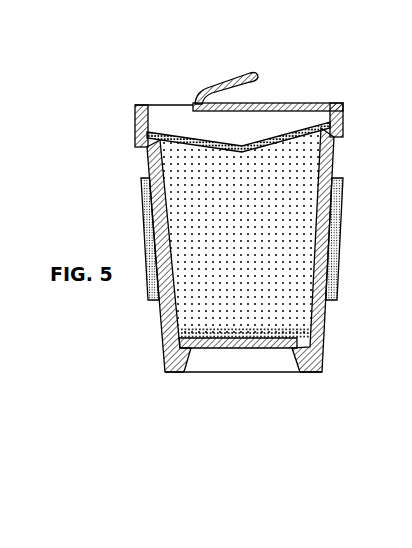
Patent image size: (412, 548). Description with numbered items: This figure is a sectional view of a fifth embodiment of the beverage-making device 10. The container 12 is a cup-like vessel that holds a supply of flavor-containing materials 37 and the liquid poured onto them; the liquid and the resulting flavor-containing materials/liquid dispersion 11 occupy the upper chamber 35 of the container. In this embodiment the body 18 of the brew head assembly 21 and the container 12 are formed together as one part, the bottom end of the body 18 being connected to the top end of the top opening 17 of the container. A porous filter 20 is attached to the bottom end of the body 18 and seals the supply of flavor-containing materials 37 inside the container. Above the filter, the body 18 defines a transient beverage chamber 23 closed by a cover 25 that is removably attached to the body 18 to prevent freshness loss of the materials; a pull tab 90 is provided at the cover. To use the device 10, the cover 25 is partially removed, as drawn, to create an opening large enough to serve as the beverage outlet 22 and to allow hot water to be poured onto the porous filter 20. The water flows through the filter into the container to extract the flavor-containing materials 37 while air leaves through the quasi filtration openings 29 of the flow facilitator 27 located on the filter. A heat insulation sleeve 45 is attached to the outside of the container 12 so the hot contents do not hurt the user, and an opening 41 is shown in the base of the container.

The device 10 is at (352, 86).
The flavor-containing materials/liquid dispersion 11 is at (172, 195).
The container 12 is at (332, 354).
The top opening 17 is at (172, 157).
The body 18 is at (343, 129).
The porous filter 20 is at (280, 139).
The brew head assembly 21 is at (354, 156).
The beverage outlet 22 is at (153, 112).
The transient beverage chamber 23 is at (183, 113).
The cover 25 is at (260, 103).
The flow facilitator 27 is at (292, 152).
The quasi filtration openings 29 is at (320, 131).
The upper chamber 35 is at (290, 270).
The flavor-containing materials 37 is at (273, 303).
The bottom opening 41 is at (260, 347).
The sleeve 45 is at (338, 242).
The pull tab 90 is at (247, 72).